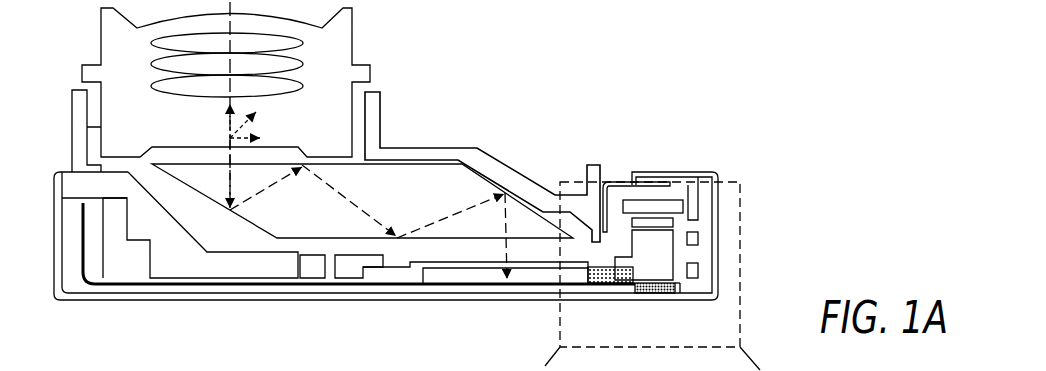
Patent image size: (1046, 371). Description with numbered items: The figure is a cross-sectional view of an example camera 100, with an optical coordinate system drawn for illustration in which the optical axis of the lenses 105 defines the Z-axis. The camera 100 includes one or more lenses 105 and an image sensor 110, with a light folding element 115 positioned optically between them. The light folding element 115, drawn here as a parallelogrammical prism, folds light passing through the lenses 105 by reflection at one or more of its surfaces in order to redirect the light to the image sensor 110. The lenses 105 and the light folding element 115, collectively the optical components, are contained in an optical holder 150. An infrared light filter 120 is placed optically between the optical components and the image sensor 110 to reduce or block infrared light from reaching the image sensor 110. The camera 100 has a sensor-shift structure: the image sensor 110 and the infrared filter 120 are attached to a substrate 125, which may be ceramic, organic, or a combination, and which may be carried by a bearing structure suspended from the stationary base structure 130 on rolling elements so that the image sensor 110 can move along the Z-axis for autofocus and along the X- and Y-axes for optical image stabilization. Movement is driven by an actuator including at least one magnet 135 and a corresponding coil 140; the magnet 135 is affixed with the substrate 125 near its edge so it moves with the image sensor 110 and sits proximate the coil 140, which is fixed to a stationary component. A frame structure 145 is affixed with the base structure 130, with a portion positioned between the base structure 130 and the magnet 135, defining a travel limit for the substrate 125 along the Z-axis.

The camera 100 is at (786, 63).
The lenses 105 is at (300, 33).
The image sensor 110 is at (450, 285).
The light folding element 115 is at (362, 201).
The infrared light filter 120 is at (467, 248).
The substrate 125 is at (608, 283).
The stationary base structure 130 is at (257, 297).
The magnet 135 is at (638, 240).
The coil 140 is at (698, 270).
The frame structure 145 is at (655, 293).
The optical holder 150 is at (431, 148).